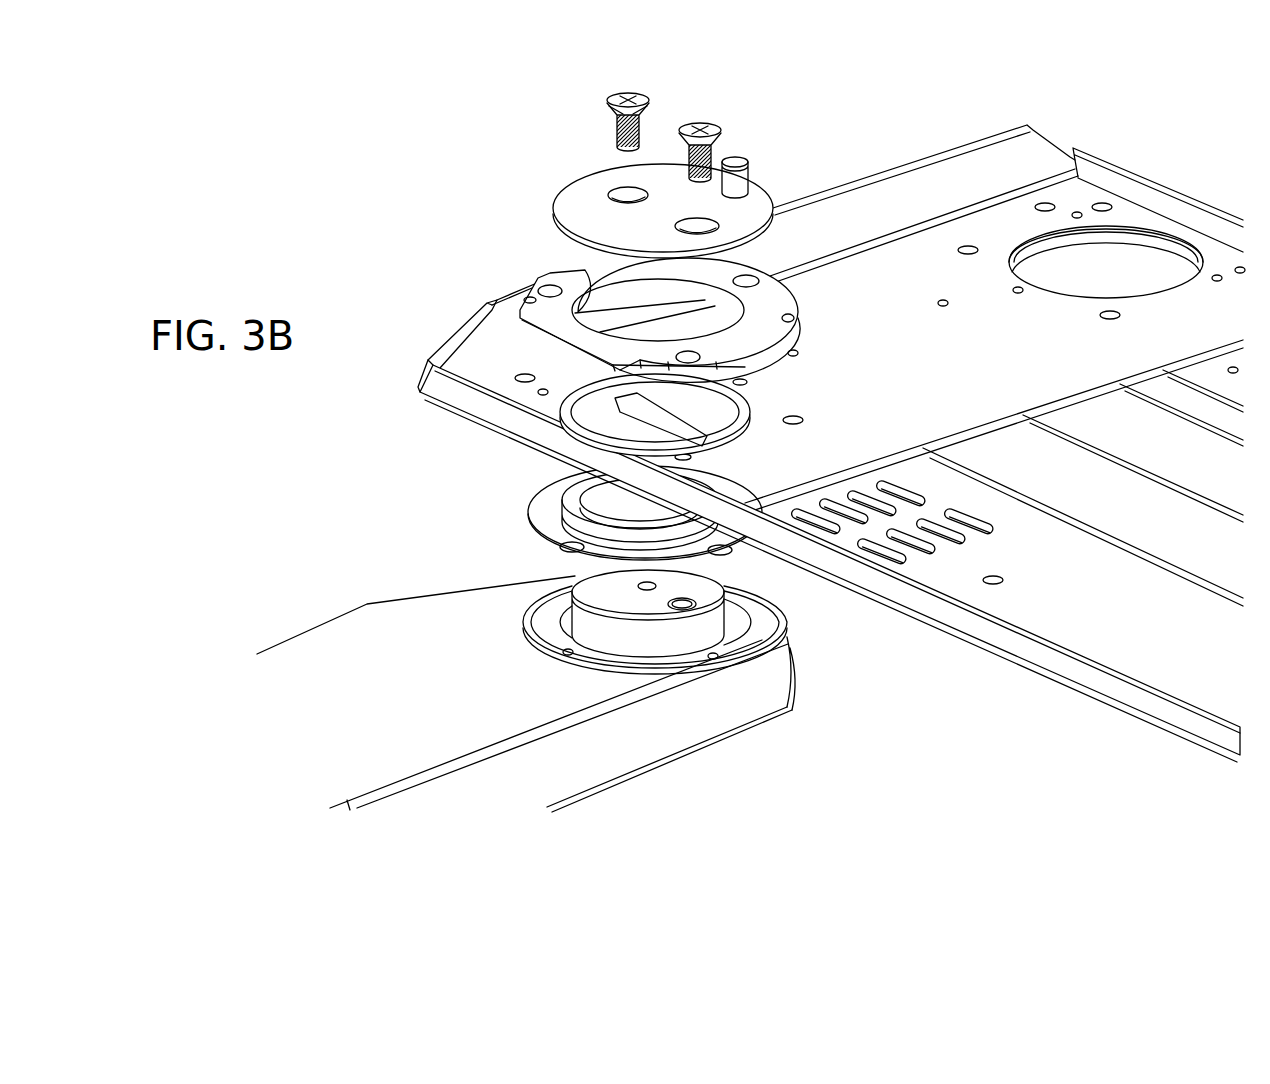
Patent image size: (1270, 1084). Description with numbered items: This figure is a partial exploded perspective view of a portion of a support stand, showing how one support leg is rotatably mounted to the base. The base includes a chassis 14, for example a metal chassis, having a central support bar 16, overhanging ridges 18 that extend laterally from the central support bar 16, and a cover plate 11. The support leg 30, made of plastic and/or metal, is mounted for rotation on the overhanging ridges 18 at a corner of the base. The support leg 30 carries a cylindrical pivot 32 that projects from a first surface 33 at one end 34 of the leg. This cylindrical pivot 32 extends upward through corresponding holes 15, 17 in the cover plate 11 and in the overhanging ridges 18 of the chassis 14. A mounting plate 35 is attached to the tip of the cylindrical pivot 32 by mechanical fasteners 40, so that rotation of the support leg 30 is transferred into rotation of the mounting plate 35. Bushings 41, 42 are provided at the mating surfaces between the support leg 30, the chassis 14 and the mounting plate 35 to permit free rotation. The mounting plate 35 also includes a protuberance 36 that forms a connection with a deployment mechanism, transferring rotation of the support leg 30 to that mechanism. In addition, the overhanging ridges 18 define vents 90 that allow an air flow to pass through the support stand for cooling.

The cover plate 11 is at (925, 270).
The chassis 14 is at (836, 355).
The hole 15 is at (590, 383).
The central support bar 16 is at (1112, 506).
The hole 17 is at (603, 393).
The overhanging ridges 18 is at (1106, 598).
The support leg 30 is at (382, 583).
The cylindrical pivot 32 is at (673, 633).
The first surface 33 is at (436, 675).
The end of the leg 34 is at (693, 709).
The mounting plate 35 is at (580, 213).
The protuberance 36 is at (745, 178).
The mechanical fasteners 40 is at (628, 98).
The bushing 41 is at (530, 525).
The bushing 42 is at (572, 275).
The vents 90 is at (903, 562).